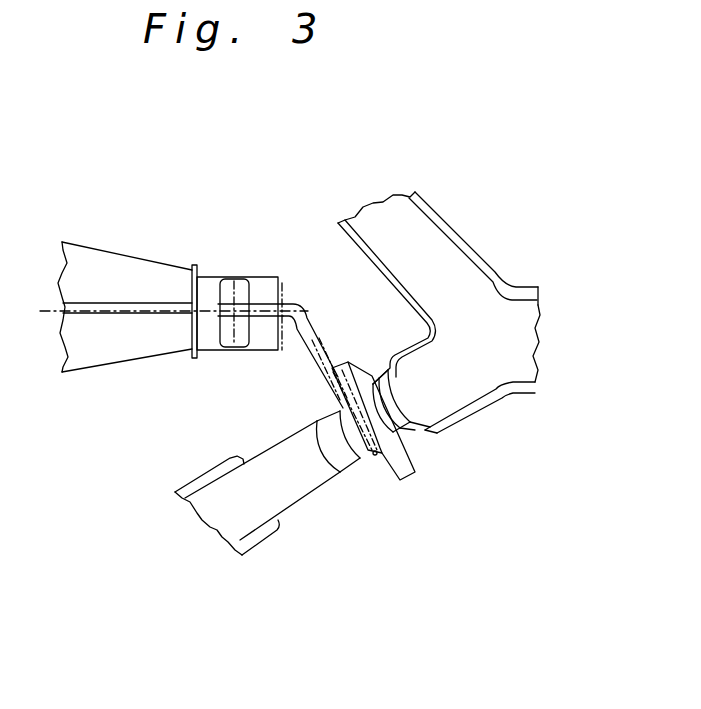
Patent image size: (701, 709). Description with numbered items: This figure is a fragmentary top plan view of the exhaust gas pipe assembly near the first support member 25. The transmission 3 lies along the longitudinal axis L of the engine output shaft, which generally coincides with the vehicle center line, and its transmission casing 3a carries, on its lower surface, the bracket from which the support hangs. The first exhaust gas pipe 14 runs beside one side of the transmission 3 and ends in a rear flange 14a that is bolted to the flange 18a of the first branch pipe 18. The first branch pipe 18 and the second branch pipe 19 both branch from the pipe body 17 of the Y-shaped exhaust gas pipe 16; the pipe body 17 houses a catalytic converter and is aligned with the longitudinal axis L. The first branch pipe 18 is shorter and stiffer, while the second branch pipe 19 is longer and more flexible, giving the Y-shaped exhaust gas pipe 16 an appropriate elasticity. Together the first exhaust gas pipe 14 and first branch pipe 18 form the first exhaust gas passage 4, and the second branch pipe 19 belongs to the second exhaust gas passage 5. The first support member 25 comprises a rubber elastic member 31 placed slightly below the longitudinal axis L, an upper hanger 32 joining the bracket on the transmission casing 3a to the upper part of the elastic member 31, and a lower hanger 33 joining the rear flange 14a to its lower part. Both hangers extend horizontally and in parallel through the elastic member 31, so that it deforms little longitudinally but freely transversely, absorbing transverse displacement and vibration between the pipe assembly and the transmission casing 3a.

The transmission 3 is at (86, 245).
The transmission casing 3a is at (168, 343).
The longitudinal axis L is at (53, 308).
The elastic member 31 is at (286, 279).
The upper hanger 32 is at (260, 293).
The lower hanger 33 is at (311, 322).
The first support member 25 is at (278, 386).
The second exhaust gas passage 5 is at (458, 213).
The second branch pipe 19 is at (433, 240).
The Y-shaped exhaust gas pipe 16 is at (529, 284).
The pipe body 17 is at (517, 365).
The first branch pipe 18 is at (453, 395).
The flange of the first branch pipe 18a is at (420, 474).
The rear flange 14a is at (392, 478).
The first exhaust gas passage 4 is at (335, 496).
The first exhaust gas pipe 14 is at (266, 507).